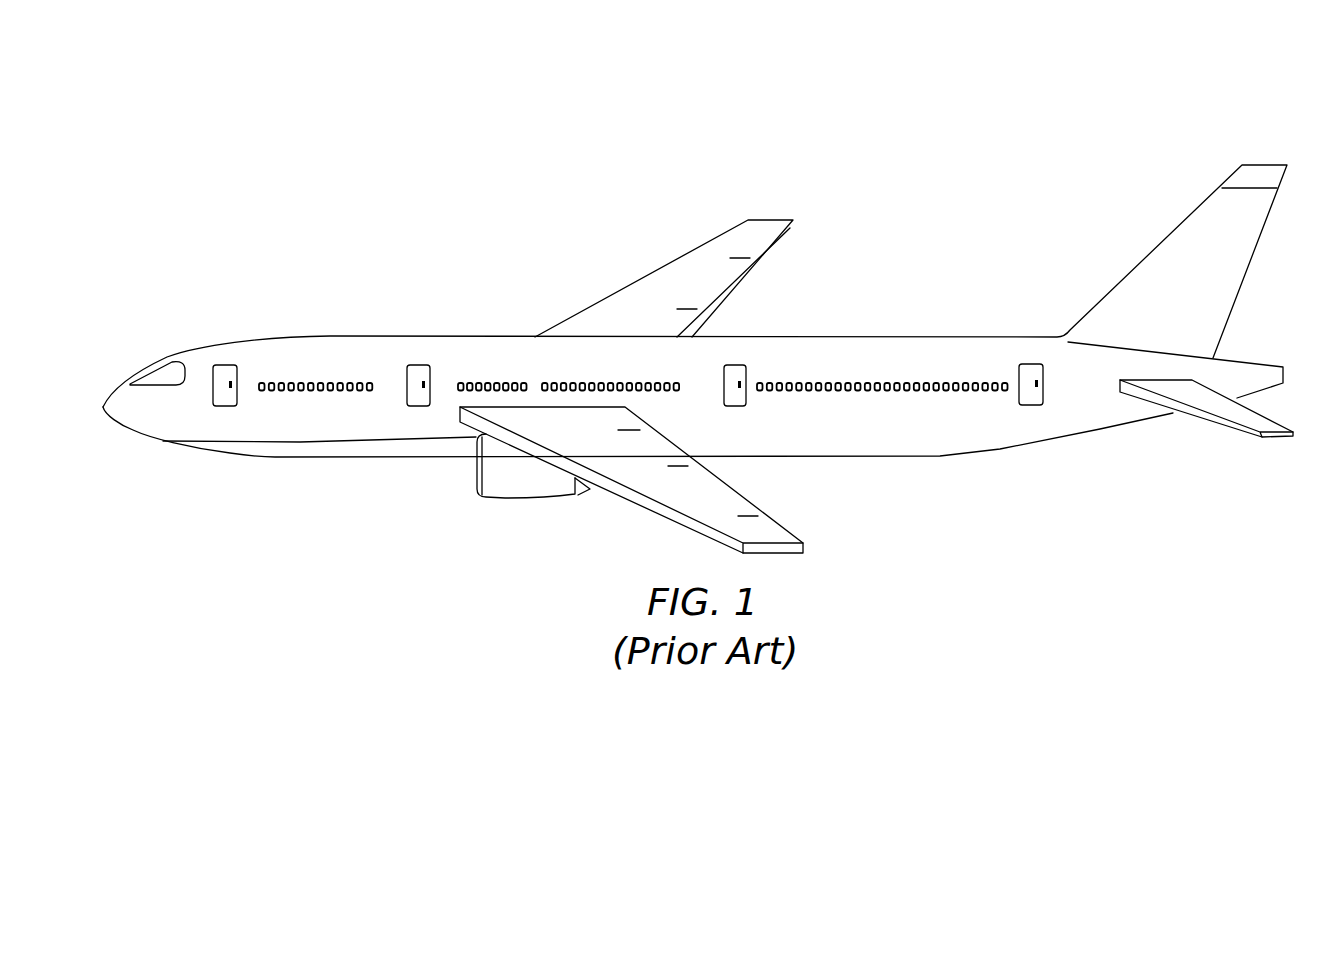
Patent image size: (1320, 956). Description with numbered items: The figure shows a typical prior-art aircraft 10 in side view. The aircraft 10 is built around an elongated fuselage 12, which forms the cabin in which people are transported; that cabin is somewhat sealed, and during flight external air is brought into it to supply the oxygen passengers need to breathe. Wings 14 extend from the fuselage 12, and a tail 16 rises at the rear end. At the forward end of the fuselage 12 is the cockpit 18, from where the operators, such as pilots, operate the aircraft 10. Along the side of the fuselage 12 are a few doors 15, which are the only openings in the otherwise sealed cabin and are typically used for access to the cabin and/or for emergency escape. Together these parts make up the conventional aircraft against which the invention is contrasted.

The aircraft 10 is at (1080, 110).
The fuselage 12 is at (512, 335).
The wings 14 is at (628, 467).
The doors 15 is at (222, 370).
The tail 16 is at (1248, 224).
The cockpit 18 is at (147, 367).